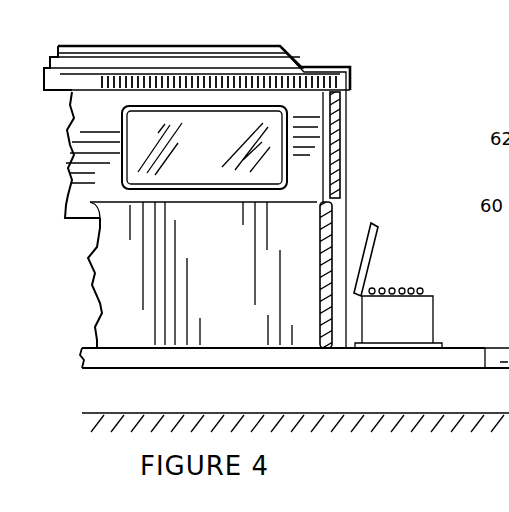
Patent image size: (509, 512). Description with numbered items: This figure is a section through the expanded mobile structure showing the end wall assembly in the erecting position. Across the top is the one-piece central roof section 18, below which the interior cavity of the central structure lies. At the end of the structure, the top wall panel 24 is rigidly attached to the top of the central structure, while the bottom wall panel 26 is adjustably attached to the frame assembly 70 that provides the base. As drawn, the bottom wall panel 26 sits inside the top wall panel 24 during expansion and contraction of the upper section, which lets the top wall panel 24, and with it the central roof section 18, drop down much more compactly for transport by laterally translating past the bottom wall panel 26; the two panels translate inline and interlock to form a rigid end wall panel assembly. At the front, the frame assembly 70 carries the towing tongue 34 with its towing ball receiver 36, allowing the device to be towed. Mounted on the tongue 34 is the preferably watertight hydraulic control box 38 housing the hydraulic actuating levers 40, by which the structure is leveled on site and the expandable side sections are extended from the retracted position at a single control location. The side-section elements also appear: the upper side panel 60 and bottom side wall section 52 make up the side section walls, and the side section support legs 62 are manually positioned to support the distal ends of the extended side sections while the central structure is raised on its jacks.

The central roof section 18 is at (158, 45).
The top wall panel 24 is at (343, 143).
The bottom wall panel 26 is at (327, 212).
The towing tongue 34 is at (437, 360).
The towing ball receiver 36 is at (497, 337).
The hydraulic control box 38 is at (411, 334).
The hydraulic actuating levers 40 is at (400, 287).
The bottom side wall section 52 is at (118, 283).
The upper side panel 60 is at (90, 122).
The side section support legs 62 is at (222, 146).
The frame assembly 70 is at (124, 360).